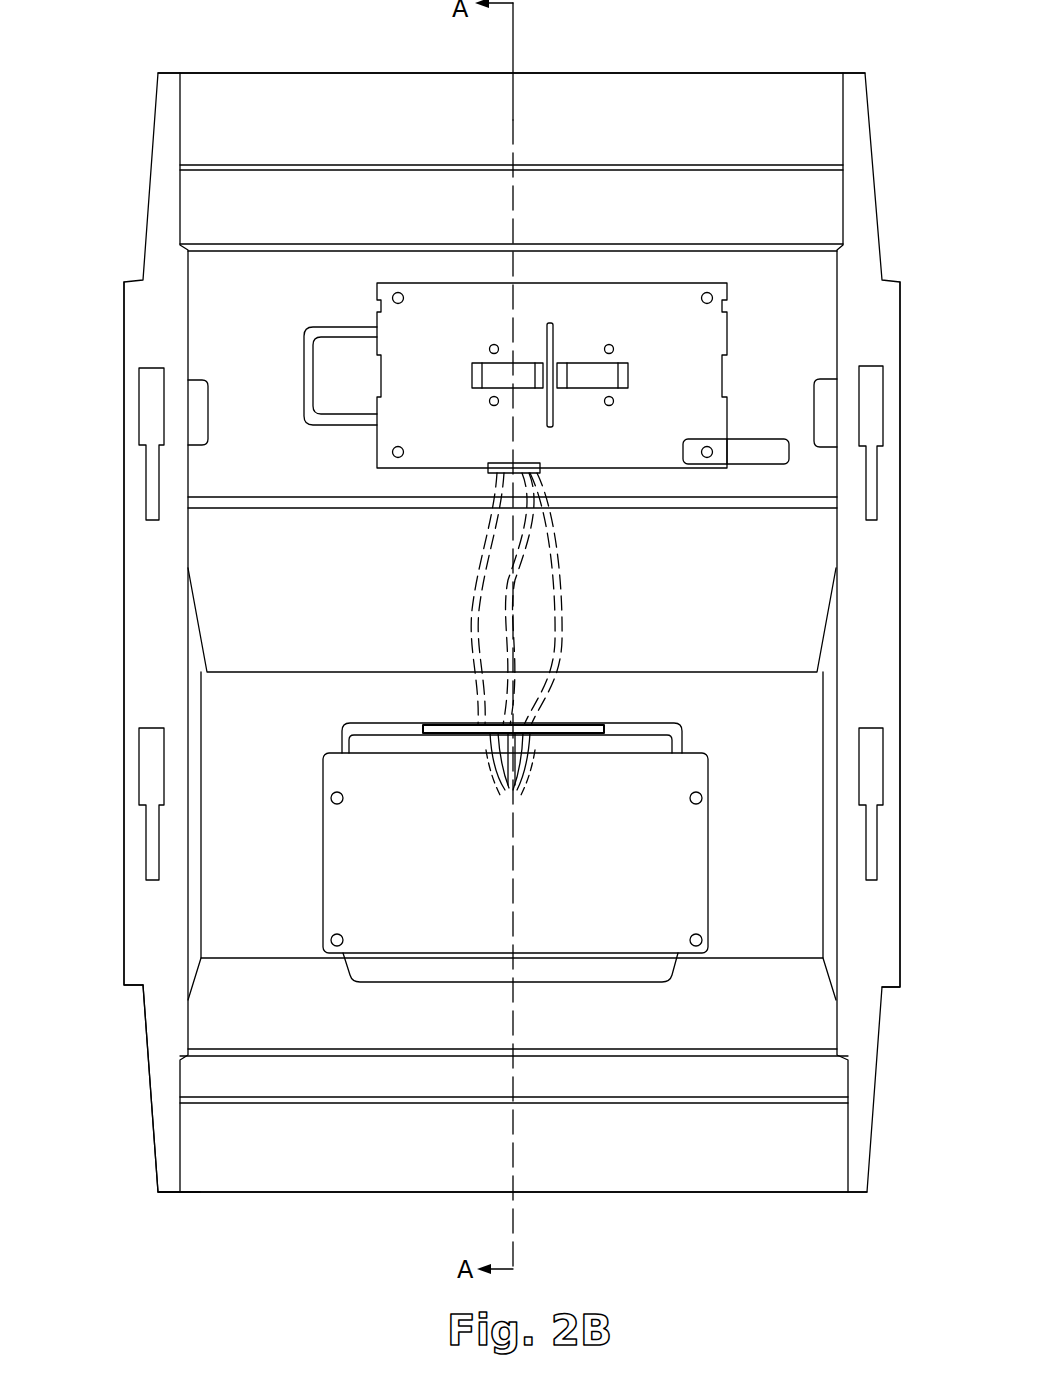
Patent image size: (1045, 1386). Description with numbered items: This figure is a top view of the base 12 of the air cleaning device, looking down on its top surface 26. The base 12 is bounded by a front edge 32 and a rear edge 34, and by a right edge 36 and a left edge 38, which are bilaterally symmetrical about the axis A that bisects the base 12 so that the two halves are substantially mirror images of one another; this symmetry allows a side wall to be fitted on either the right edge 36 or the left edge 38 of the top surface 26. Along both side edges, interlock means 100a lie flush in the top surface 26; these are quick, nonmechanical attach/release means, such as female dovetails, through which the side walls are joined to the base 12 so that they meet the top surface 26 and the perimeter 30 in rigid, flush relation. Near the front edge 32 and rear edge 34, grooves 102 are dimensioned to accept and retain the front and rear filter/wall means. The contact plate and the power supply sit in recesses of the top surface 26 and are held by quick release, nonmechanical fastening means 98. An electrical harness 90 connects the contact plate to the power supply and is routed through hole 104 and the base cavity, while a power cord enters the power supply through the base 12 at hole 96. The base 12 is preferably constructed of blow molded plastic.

The base 12 is at (752, 1236).
The top surface 26 is at (290, 606).
The perimeter 30 is at (197, 1193).
The front edge 32 is at (625, 72).
The rear edge 34 is at (422, 1193).
The right edge 36 is at (126, 984).
The left edge 38 is at (876, 1078).
The electrical harness 90 is at (553, 598).
The hole 96 is at (510, 788).
The quick release, nonmechanical fastening means 98 is at (396, 296).
The interlock means 100a is at (140, 425).
The grooves 102 is at (227, 163).
The hole 104 is at (522, 463).